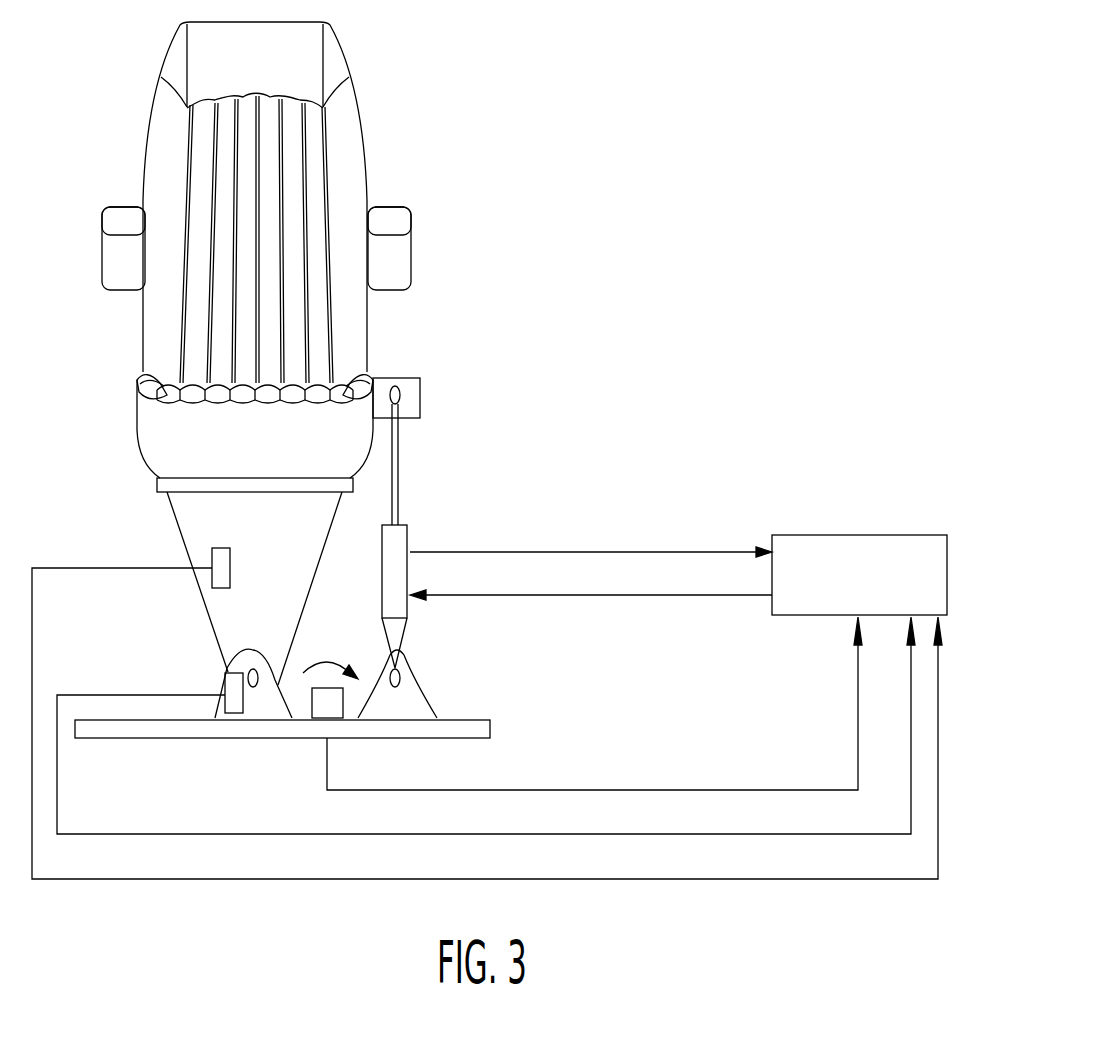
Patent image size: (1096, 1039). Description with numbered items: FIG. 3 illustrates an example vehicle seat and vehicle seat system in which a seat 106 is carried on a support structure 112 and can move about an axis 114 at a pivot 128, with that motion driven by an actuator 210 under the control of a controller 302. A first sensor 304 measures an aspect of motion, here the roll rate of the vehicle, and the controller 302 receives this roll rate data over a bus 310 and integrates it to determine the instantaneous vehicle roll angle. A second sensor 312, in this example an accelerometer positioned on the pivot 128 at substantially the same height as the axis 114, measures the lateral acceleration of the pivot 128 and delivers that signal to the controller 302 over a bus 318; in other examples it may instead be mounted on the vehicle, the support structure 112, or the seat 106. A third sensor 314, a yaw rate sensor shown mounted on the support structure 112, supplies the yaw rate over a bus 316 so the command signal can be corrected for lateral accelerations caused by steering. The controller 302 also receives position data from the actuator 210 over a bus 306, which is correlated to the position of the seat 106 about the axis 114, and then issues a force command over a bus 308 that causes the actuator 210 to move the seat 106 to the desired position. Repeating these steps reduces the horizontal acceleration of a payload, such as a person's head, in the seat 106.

The seat 106 is at (143, 320).
The support structure 112 is at (197, 517).
The pivot 128 is at (265, 652).
The axis 114 is at (252, 667).
The actuator 210 is at (407, 525).
The controller 302 is at (838, 535).
The first sensor 304 is at (312, 708).
The bus 306 is at (573, 552).
The bus 308 is at (573, 597).
The bus 310 is at (594, 788).
The second sensor 312 is at (237, 722).
The third sensor 314 is at (212, 576).
The bus 316 is at (200, 880).
The bus 318 is at (200, 834).